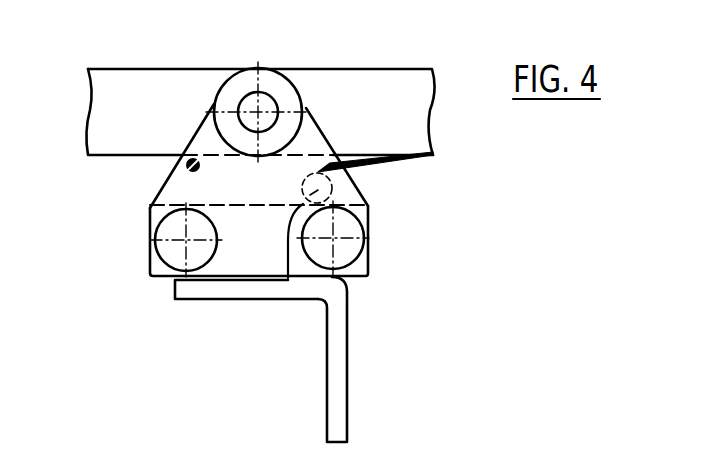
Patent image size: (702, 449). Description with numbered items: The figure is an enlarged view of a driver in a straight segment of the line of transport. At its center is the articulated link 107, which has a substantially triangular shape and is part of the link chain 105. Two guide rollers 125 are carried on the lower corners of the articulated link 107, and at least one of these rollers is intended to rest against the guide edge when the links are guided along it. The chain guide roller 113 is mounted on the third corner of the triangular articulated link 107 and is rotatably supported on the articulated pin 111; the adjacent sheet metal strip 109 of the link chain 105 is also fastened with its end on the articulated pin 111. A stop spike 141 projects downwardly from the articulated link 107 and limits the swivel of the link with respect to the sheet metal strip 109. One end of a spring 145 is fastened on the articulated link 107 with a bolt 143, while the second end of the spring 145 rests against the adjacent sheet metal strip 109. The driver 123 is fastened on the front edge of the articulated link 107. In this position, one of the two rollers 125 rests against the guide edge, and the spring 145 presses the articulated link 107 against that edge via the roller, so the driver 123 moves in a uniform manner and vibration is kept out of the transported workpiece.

The link chain 105 is at (259, 107).
The articulated link 107 is at (219, 241).
The sheet metal strip 109 is at (267, 82).
The articulated pin 111 is at (292, 77).
The chain guide roller 113 is at (258, 84).
The driver 123 is at (419, 359).
The guide rollers 125 is at (283, 275).
The stop spike 141 is at (115, 196).
The bolt 143 is at (253, 258).
The spring 145 is at (384, 190).